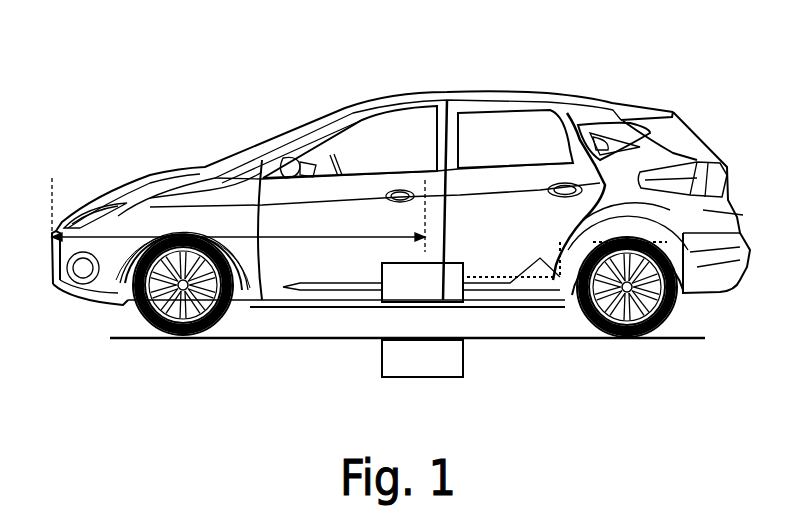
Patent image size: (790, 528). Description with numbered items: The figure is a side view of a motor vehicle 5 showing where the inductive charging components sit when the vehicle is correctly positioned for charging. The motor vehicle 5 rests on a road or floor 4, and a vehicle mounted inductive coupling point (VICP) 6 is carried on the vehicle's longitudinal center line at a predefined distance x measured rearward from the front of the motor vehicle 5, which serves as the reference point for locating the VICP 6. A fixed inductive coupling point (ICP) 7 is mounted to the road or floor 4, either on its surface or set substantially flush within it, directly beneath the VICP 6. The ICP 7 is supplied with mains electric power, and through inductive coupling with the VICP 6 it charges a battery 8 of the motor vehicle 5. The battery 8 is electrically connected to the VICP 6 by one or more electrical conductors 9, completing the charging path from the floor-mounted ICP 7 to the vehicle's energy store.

The road or floor 4 is at (104, 343).
The motor vehicle 5 is at (442, 85).
The vehicle mounted inductive coupling point 6 is at (376, 289).
The fixed inductive coupling point 7 is at (374, 358).
The battery 8 is at (616, 298).
The electrical conductors 9 is at (491, 278).